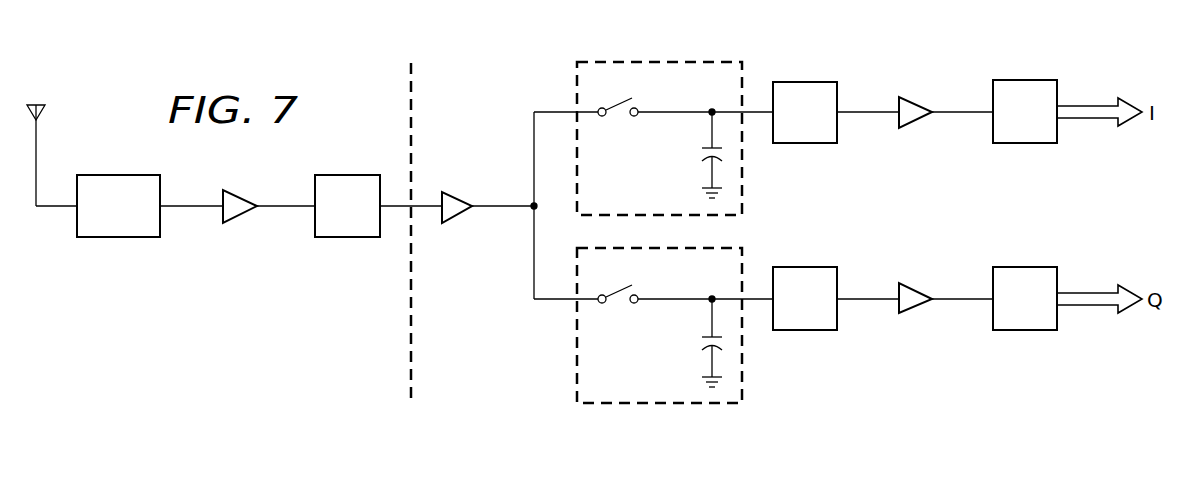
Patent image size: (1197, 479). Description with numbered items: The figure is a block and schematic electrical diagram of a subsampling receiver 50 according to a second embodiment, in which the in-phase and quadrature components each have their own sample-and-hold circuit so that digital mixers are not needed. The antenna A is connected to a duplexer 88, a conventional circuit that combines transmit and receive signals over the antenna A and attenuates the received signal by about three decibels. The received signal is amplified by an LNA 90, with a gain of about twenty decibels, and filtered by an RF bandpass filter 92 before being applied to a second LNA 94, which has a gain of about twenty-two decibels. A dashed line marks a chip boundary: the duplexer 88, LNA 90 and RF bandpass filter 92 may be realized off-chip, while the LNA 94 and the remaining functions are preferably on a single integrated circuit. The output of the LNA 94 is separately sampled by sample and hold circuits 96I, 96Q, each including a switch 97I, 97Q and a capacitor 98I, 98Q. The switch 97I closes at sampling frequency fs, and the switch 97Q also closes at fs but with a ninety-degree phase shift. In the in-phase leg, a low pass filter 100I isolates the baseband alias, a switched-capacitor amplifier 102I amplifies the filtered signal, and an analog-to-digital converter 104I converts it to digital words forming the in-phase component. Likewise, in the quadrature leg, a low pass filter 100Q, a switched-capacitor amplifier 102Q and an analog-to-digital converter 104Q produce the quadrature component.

The antenna A is at (31, 98).
The subsampling receiver 50 is at (303, 343).
The duplexer 88 is at (118, 237).
The LNA 90 is at (243, 215).
The RF bandpass filter 92 is at (348, 237).
The LNA 94 is at (460, 215).
The sample and hold circuit 96I is at (675, 113).
The switch 97I is at (614, 116).
The capacitor 98I is at (700, 153).
The low pass filter 100I is at (805, 82).
The switched-capacitor amplifier 102I is at (930, 85).
The analog-to-digital converter 104I is at (1025, 80).
The sample and hold circuit 96Q is at (675, 354).
The switch 97Q is at (614, 303).
The capacitor 98Q is at (700, 343).
The low pass filter 100Q is at (805, 330).
The switched-capacitor amplifier 102Q is at (918, 313).
The analog-to-digital converter 104Q is at (1025, 330).